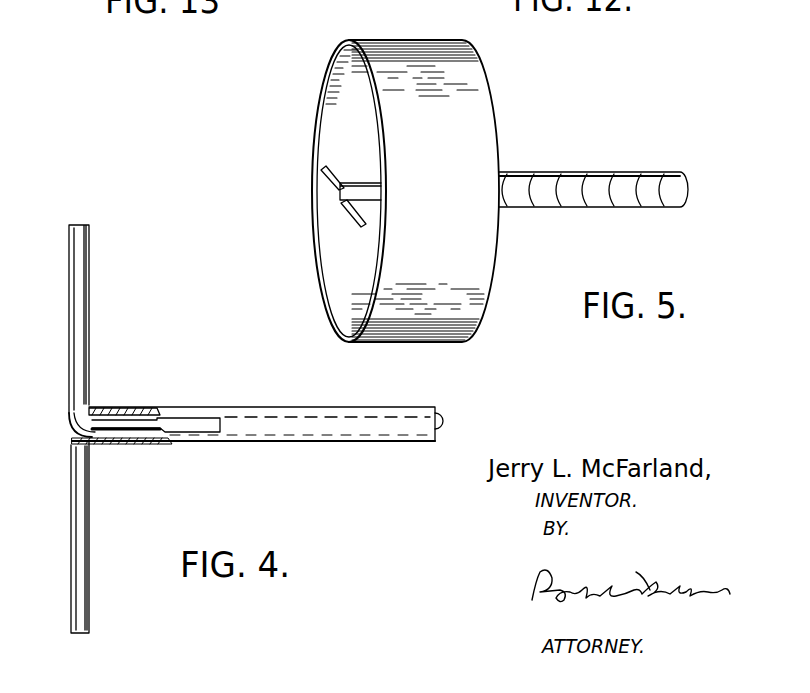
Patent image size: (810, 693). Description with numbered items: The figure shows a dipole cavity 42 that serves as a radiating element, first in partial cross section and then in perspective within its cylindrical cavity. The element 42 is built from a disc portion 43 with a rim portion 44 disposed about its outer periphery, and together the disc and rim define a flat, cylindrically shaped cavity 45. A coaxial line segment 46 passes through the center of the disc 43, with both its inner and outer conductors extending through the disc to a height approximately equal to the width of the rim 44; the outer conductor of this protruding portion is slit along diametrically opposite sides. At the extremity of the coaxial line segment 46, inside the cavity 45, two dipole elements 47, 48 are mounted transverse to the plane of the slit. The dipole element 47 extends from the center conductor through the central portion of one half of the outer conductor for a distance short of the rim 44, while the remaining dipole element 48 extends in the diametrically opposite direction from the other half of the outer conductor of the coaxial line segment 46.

In FIG. 5, the dipole cavity 42 is at (301, 185).
In FIG. 5, the disc portion 43 is at (378, 163).
In FIG. 5, the rim portion 44 is at (402, 36).
In FIG. 5, the cavity 45 is at (447, 168).
In FIG. 5, the coaxial line segment 46 is at (541, 208).
In FIG. 4, the coaxial line segment 46 is at (204, 407).
In FIG. 5, the dipole element 47 is at (338, 174).
In FIG. 4, the dipole element 47 is at (84, 330).
In FIG. 5, the dipole element 48 is at (364, 227).
In FIG. 4, the dipole element 48 is at (86, 596).